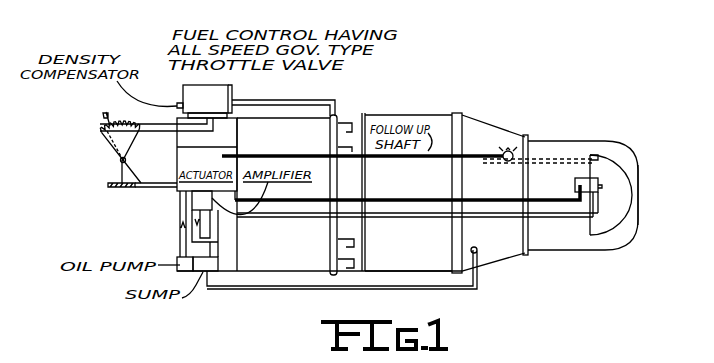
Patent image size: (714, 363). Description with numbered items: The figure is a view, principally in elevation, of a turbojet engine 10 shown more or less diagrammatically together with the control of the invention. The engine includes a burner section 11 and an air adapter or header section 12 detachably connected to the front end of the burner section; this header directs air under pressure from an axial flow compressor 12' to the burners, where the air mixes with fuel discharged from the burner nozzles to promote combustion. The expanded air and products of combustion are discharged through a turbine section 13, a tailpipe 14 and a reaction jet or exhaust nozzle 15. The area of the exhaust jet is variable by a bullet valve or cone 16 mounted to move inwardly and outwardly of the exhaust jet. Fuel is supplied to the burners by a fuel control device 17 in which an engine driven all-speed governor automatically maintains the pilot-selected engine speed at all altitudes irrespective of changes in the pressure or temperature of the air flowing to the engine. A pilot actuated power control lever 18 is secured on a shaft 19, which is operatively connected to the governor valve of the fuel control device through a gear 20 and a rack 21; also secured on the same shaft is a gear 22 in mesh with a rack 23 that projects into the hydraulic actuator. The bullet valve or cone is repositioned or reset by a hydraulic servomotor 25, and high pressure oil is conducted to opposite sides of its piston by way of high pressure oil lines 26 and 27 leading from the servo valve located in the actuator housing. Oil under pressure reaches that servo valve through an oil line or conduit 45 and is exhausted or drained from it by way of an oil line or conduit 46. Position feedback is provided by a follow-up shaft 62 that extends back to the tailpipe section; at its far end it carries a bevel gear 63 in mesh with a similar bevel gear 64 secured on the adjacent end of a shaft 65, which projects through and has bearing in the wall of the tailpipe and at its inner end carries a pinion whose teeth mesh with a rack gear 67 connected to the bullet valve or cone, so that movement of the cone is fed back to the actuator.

The turbojet engine 10 is at (361, 114).
The burner section 11 is at (409, 116).
The air adapter or header section 12 is at (349, 176).
The axial flow compressor 12' is at (284, 101).
The turbine section 13 is at (458, 117).
The tailpipe 14 is at (562, 251).
The reaction jet or exhaust nozzle 15 is at (634, 213).
The bullet valve or cone 16 is at (622, 176).
The fuel control device 17 is at (213, 85).
The power control lever 18 is at (108, 112).
The shaft 19 is at (120, 158).
The gear 20 is at (103, 142).
The rack 21 is at (165, 126).
The gear 22 is at (120, 172).
The rack 23 is at (150, 188).
The hydraulic servomotor 25 is at (576, 184).
The high pressure oil line 26 is at (485, 176).
The high pressure oil line 27 is at (480, 218).
The oil line or conduit 45 is at (180, 217).
The oil line or conduit 46 is at (218, 250).
The follow-up shaft 62 is at (403, 159).
The bevel gear 63 is at (503, 153).
The bevel gear 64 is at (508, 148).
The shaft 65 is at (527, 135).
The rack gear 67 is at (543, 160).